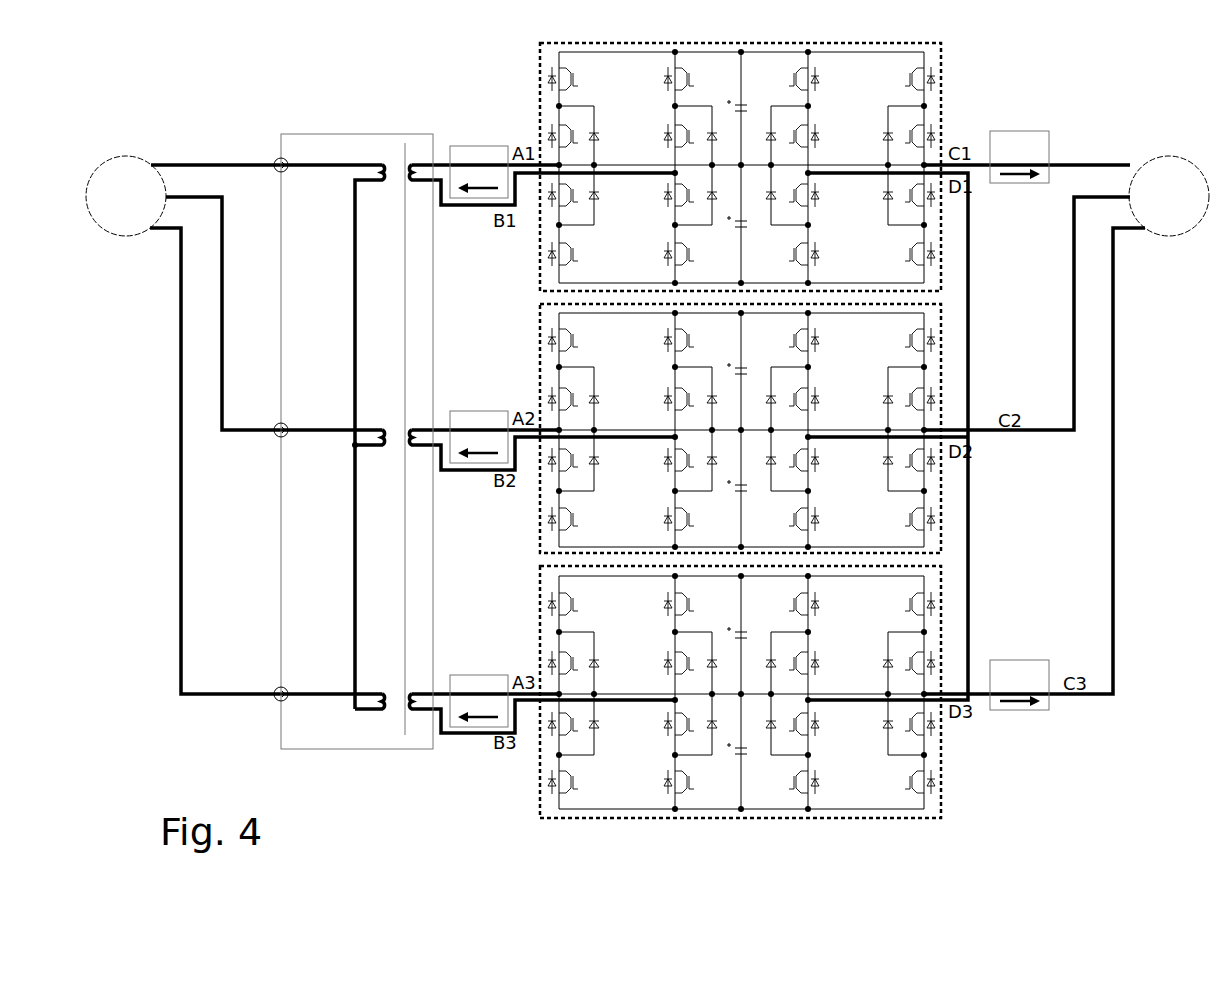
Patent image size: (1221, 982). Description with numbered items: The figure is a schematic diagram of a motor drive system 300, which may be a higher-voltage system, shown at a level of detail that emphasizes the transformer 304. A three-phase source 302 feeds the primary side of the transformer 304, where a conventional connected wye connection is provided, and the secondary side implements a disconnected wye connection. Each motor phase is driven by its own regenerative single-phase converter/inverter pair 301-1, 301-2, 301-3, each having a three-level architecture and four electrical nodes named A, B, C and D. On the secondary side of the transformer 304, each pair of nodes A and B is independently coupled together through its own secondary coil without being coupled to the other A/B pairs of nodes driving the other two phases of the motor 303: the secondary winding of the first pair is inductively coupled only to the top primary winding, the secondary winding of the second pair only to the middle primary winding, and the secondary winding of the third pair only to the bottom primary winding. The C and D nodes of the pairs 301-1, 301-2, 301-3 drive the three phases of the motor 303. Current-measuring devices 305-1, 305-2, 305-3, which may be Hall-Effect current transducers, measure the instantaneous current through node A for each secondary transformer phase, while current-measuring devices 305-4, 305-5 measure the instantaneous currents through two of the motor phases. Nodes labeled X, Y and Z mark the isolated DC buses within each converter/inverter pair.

The motor drive system 300 is at (222, 80).
The regenerative single-phase converter/inverter pair 301-1 is at (540, 52).
The regenerative single-phase converter/inverter pair 301-2 is at (540, 310).
The regenerative single-phase converter/inverter pair 301-3 is at (540, 814).
The three-phase source 302 is at (126, 155).
The motor 303 is at (1171, 155).
The transformer 304 is at (359, 134).
The current-measuring device 305-1 is at (472, 146).
The current-measuring device 305-2 is at (472, 411).
The current-measuring device 305-3 is at (472, 675).
The current-measuring device 305-4 is at (1019, 131).
The current-measuring device 305-5 is at (1017, 660).